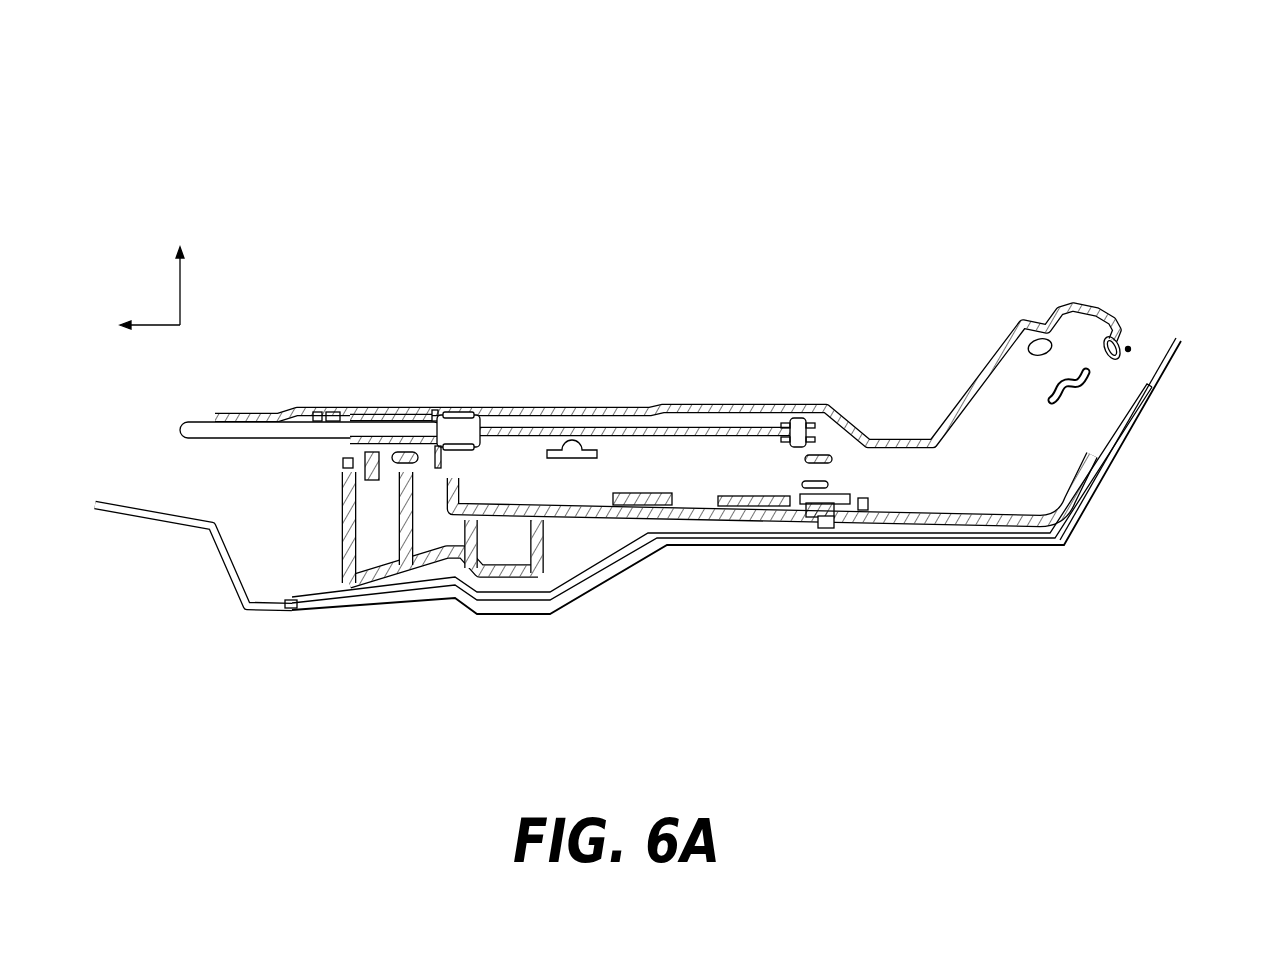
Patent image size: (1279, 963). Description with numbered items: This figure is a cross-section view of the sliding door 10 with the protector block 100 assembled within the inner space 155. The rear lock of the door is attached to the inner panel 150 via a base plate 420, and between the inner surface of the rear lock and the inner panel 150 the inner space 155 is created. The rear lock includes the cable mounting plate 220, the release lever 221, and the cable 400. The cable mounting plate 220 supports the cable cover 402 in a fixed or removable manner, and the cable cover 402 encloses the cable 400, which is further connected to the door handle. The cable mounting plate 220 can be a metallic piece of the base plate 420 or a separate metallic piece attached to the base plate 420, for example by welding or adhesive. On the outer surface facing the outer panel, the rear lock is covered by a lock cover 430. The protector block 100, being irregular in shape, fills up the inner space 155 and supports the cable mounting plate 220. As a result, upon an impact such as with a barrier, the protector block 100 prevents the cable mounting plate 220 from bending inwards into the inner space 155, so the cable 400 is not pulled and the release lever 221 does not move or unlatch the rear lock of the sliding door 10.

The sliding door 10 is at (1199, 91).
The protector block 100 is at (419, 572).
The inner panel 150 is at (212, 573).
The inner space 155 is at (308, 573).
The cable mounting plate 220 is at (352, 441).
The release lever 221 is at (806, 424).
The cable 400 is at (598, 430).
The cable cover 402 is at (461, 413).
The base plate 420 is at (970, 517).
The lock cover 430 is at (331, 404).